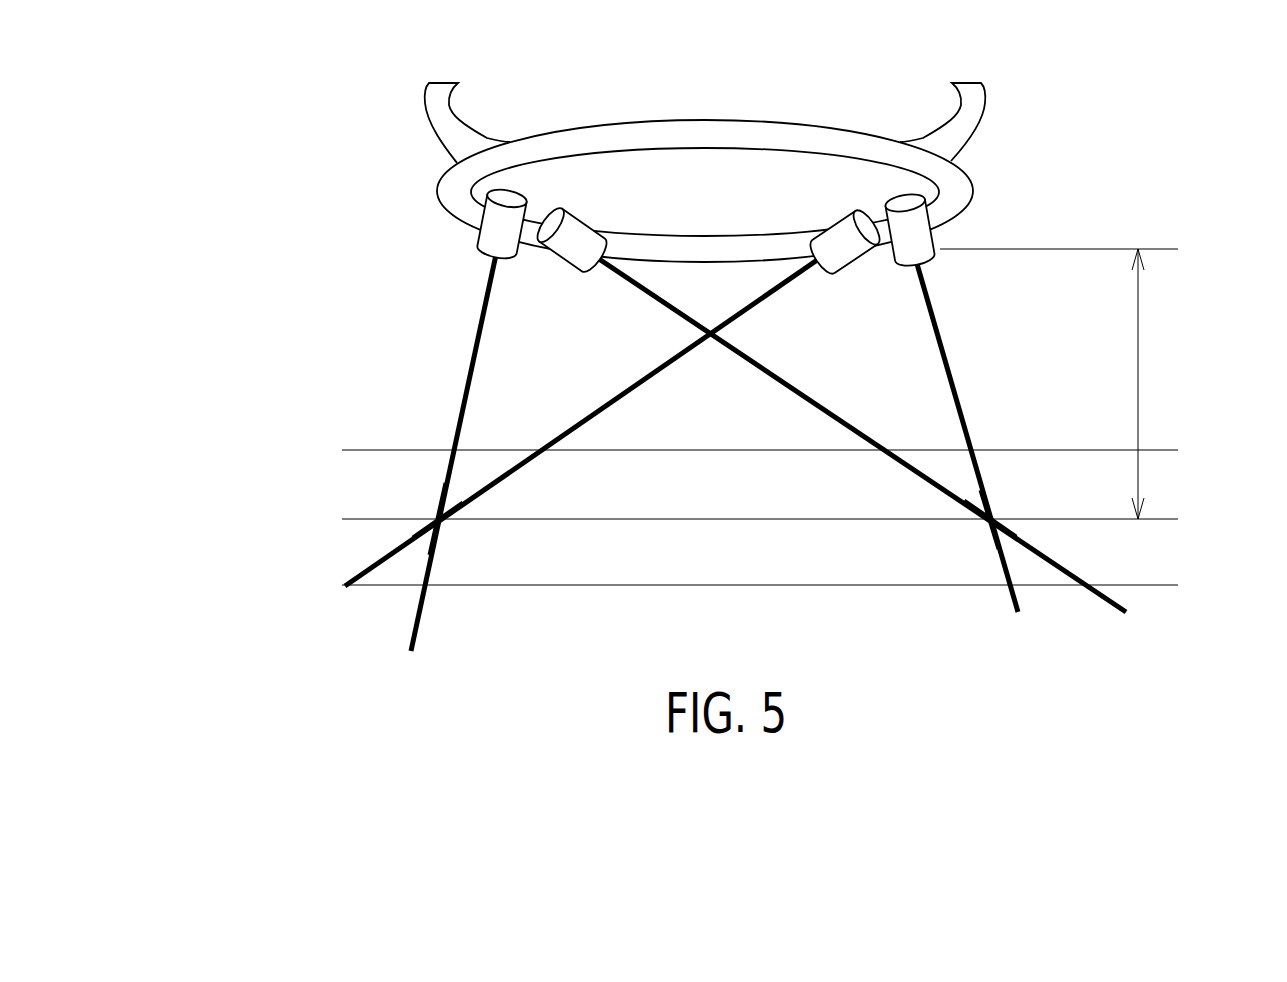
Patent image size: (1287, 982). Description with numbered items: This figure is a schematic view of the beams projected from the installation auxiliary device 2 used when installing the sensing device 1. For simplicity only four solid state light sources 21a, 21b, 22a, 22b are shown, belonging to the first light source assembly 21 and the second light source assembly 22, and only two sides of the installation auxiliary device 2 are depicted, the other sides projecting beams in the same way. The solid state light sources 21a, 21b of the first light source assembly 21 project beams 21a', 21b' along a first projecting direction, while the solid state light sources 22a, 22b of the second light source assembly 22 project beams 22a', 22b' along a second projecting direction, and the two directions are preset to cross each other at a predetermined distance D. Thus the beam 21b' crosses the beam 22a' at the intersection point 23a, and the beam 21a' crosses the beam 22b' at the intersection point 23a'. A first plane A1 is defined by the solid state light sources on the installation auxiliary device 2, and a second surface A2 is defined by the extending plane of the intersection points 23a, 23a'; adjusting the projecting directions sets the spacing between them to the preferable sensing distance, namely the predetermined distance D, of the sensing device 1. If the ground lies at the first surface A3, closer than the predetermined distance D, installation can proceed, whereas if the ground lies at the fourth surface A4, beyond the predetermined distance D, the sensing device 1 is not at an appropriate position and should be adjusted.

The sensing device 1 is at (975, 97).
The installation auxiliary device 2 is at (775, 137).
The first light source assembly 21 is at (597, 250).
The solid state light source 21a is at (622, 251).
The solid state light source 21b is at (485, 240).
The second light source assembly 22 is at (814, 202).
The solid state light source 22a is at (991, 224).
The solid state light source 22b is at (787, 199).
The beam 21a' is at (702, 421).
The beam 21b' is at (748, 433).
The beam 22a' is at (987, 434).
The beam 22b' is at (423, 450).
The intersection point 23a is at (967, 579).
The intersection point 23a' is at (357, 506).
The first plane A1 is at (1081, 246).
The second surface A2 is at (782, 519).
The first surface A3 is at (782, 449).
The fourth surface A4 is at (782, 586).
The predetermined distance D is at (1148, 384).